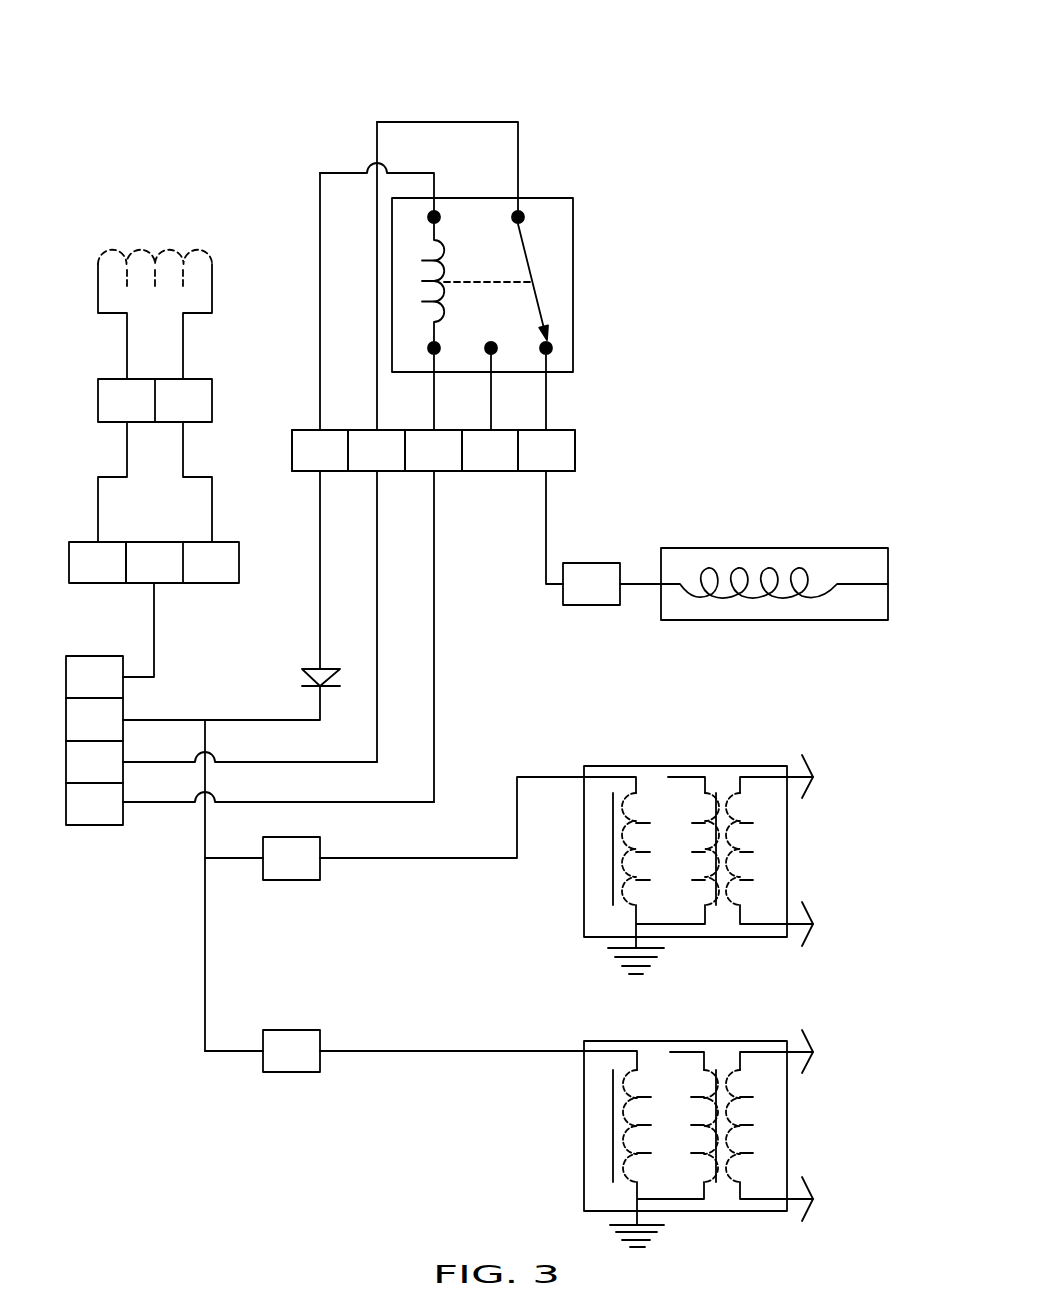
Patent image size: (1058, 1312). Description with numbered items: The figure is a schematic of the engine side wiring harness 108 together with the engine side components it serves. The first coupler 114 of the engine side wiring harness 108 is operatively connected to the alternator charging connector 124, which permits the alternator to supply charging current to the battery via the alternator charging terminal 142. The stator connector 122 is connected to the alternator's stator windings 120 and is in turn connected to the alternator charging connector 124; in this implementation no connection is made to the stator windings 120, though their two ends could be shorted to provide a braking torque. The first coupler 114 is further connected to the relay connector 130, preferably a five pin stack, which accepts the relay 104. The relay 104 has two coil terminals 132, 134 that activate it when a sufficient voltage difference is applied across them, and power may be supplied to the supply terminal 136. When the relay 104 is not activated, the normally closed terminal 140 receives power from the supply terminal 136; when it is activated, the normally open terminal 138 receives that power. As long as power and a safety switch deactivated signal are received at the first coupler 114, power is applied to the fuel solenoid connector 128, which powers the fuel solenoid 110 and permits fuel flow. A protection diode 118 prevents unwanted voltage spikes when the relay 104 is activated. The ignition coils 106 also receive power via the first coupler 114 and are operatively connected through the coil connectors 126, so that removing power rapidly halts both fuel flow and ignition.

The relay 104 is at (573, 277).
The ignition coils 106 is at (787, 1130).
The engine side wiring harness 108 is at (645, 76).
The fuel solenoid 110 is at (778, 548).
The first coupler 114 is at (66, 677).
The protection diode 118 is at (312, 668).
The stator windings 120 is at (102, 263).
The stator connector 122 is at (98, 400).
The alternator charging connector 124 is at (131, 533).
The coil connectors 126 is at (292, 880).
The fuel solenoid connector 128 is at (590, 563).
The relay connector 130 is at (484, 451).
The coil terminal 132 is at (313, 450).
The coil terminal 134 is at (427, 457).
The supply terminal 136 is at (388, 440).
The normally open terminal 138 is at (497, 457).
The normally closed terminal 140 is at (558, 450).
The alternator charging terminal 142 is at (157, 560).